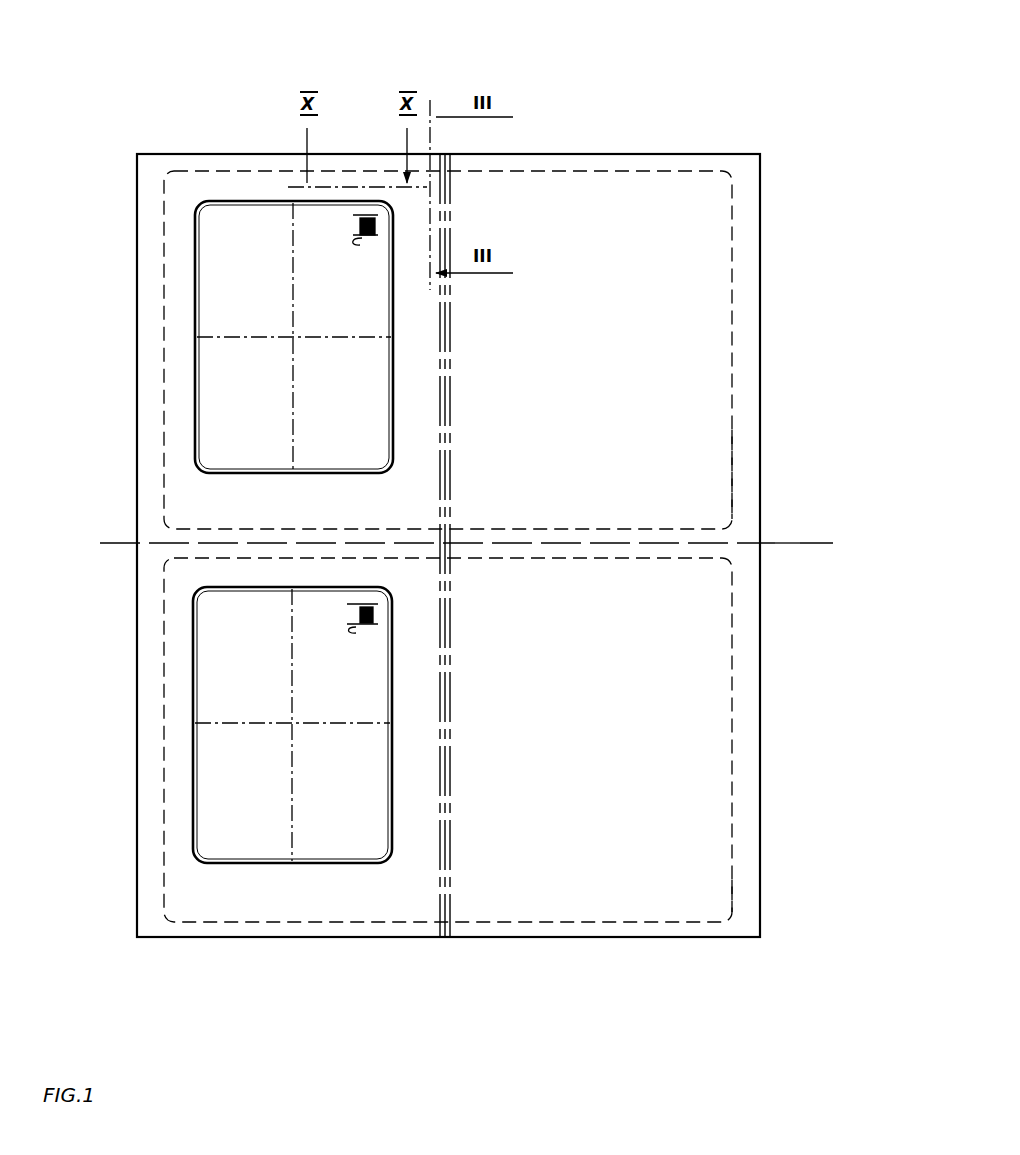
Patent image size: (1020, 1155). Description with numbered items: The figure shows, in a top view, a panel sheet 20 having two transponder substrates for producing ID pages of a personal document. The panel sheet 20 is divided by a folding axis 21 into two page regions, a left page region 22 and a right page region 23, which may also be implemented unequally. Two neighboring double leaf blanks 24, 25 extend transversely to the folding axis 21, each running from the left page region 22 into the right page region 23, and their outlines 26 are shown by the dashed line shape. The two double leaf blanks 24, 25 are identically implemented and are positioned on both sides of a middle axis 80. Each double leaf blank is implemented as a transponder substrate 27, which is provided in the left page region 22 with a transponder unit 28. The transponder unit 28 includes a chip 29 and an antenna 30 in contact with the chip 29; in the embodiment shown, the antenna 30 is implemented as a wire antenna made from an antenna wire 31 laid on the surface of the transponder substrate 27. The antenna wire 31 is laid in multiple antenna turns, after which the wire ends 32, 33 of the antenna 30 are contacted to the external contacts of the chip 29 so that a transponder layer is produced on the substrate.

The panel sheet 20 is at (653, 110).
The folding axis 21 is at (450, 923).
The left page region 22 is at (100, 548).
The right page region 23 is at (775, 542).
The double leaf blank 24 is at (683, 295).
The double leaf blank 25 is at (682, 757).
The outline 26 is at (732, 433).
The transponder substrate 27 is at (529, 561).
The transponder unit 28 is at (234, 547).
The chip 29 is at (357, 227).
The antenna 30 is at (230, 197).
The antenna wire 31 is at (263, 197).
The wire end 32 is at (382, 240).
The wire end 33 is at (367, 213).
The middle axis 80 is at (825, 542).